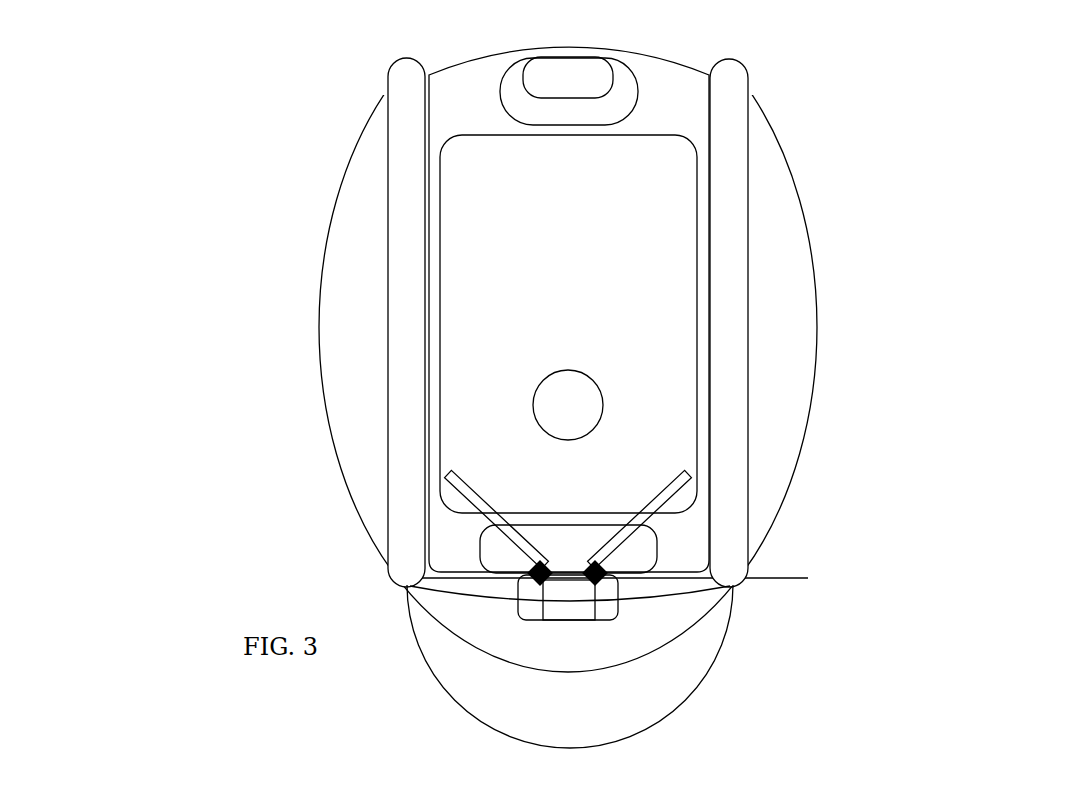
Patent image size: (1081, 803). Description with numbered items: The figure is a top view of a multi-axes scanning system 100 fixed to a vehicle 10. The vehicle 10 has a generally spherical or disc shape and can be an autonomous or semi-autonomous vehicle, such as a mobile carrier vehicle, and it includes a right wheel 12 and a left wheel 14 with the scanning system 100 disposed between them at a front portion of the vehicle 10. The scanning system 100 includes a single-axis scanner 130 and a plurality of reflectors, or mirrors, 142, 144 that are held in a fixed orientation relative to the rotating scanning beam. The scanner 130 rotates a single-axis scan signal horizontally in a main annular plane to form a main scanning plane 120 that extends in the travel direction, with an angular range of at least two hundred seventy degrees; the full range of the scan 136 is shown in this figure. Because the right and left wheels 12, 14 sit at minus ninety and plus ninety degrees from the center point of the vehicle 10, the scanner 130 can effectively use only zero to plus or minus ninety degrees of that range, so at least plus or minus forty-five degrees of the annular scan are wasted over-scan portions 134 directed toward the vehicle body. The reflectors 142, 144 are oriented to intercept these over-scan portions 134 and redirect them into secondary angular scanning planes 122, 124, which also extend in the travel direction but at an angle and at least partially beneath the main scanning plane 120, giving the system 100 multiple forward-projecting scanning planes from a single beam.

The vehicle 10 is at (897, 156).
The right wheel 12 is at (735, 90).
The left wheel 14 is at (395, 103).
The multi-axes scanning system 100 is at (447, 594).
The main scanning plane 120 is at (695, 632).
The secondary scanning plane 122 is at (642, 653).
The secondary scanning plane 124 is at (473, 665).
The single-axis scanner 130 is at (570, 608).
The over-scan portions 134 is at (722, 527).
The full range of the scan 136 is at (685, 471).
The reflector 142 is at (603, 570).
The reflector 144 is at (603, 570).